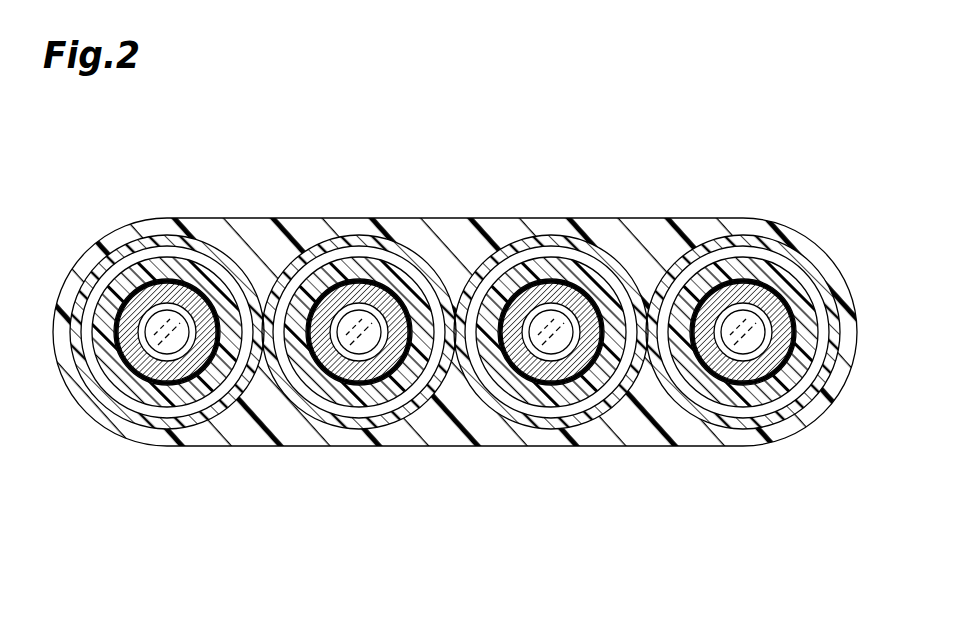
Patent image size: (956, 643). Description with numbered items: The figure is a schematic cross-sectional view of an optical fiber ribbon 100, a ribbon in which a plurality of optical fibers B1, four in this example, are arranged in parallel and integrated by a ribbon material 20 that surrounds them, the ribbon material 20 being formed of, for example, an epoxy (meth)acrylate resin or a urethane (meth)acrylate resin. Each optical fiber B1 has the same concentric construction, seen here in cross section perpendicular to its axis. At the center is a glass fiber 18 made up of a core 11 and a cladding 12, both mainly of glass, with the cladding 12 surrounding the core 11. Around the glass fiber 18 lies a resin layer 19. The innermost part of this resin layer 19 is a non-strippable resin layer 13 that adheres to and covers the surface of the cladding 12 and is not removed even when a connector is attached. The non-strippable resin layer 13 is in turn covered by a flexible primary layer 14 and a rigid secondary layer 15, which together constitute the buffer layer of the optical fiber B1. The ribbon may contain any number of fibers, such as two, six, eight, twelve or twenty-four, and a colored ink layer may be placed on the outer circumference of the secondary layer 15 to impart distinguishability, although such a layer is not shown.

The core 11 is at (165, 345).
The cladding 12 is at (170, 358).
The non-strippable resin layer 13 is at (187, 378).
The primary layer 14 is at (203, 390).
The secondary layer 15 is at (237, 388).
The glass fiber 18 is at (144, 418).
The resin layer 19 is at (186, 394).
The optical fiber B1 is at (186, 416).
The ribbon material 20 is at (640, 237).
The optical fiber ribbon 100 is at (455, 359).